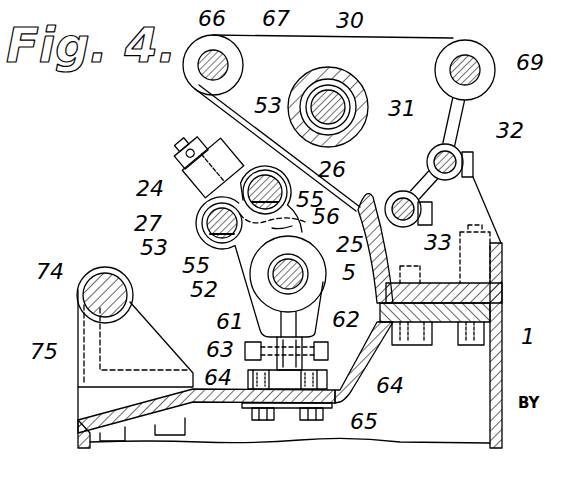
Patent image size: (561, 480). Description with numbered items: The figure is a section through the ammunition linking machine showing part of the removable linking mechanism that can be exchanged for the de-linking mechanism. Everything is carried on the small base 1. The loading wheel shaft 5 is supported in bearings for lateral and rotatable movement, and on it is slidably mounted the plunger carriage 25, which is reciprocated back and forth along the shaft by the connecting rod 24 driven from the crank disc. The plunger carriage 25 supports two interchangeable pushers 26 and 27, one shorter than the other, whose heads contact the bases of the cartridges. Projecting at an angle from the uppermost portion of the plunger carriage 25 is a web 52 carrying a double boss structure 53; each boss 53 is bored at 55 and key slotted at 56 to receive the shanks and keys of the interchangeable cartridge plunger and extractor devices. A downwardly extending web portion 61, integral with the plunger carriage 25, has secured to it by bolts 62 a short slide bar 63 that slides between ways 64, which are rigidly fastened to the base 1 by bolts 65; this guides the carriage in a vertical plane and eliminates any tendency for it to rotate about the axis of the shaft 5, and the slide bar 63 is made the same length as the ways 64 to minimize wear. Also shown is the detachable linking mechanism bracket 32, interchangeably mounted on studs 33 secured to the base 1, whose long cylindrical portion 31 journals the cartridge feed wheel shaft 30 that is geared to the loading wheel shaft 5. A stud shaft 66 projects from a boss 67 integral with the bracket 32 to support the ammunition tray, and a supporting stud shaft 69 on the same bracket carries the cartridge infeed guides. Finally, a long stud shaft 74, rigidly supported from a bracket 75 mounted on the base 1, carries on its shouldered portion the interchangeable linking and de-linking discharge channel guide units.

The base 1 is at (505, 352).
The loading wheel shaft 5 is at (290, 273).
The connecting rod 24 is at (190, 180).
The plunger carriage 25 is at (318, 262).
The pusher 26 is at (287, 188).
The pusher 27 is at (202, 222).
The cartridge feed wheel shaft 30 is at (330, 100).
The long cylindrical portion 31 is at (368, 105).
The linking mechanism bracket 32 is at (428, 131).
The studs 33 is at (470, 228).
The web 52 is at (247, 254).
The double boss structure 53 is at (268, 118).
The bore 55 is at (214, 260).
The key slot 56 is at (294, 216).
The downwardly extending web portion 61 is at (266, 316).
The bolts 62 is at (322, 343).
The slide bar 63 is at (282, 362).
The ways 64 is at (376, 386).
The bolts 65 is at (268, 420).
The stud shaft 66 is at (212, 58).
The boss 67 is at (236, 62).
The supporting stud shaft 69 is at (478, 70).
The long stud shaft 74 is at (100, 290).
The bracket 75 is at (105, 350).